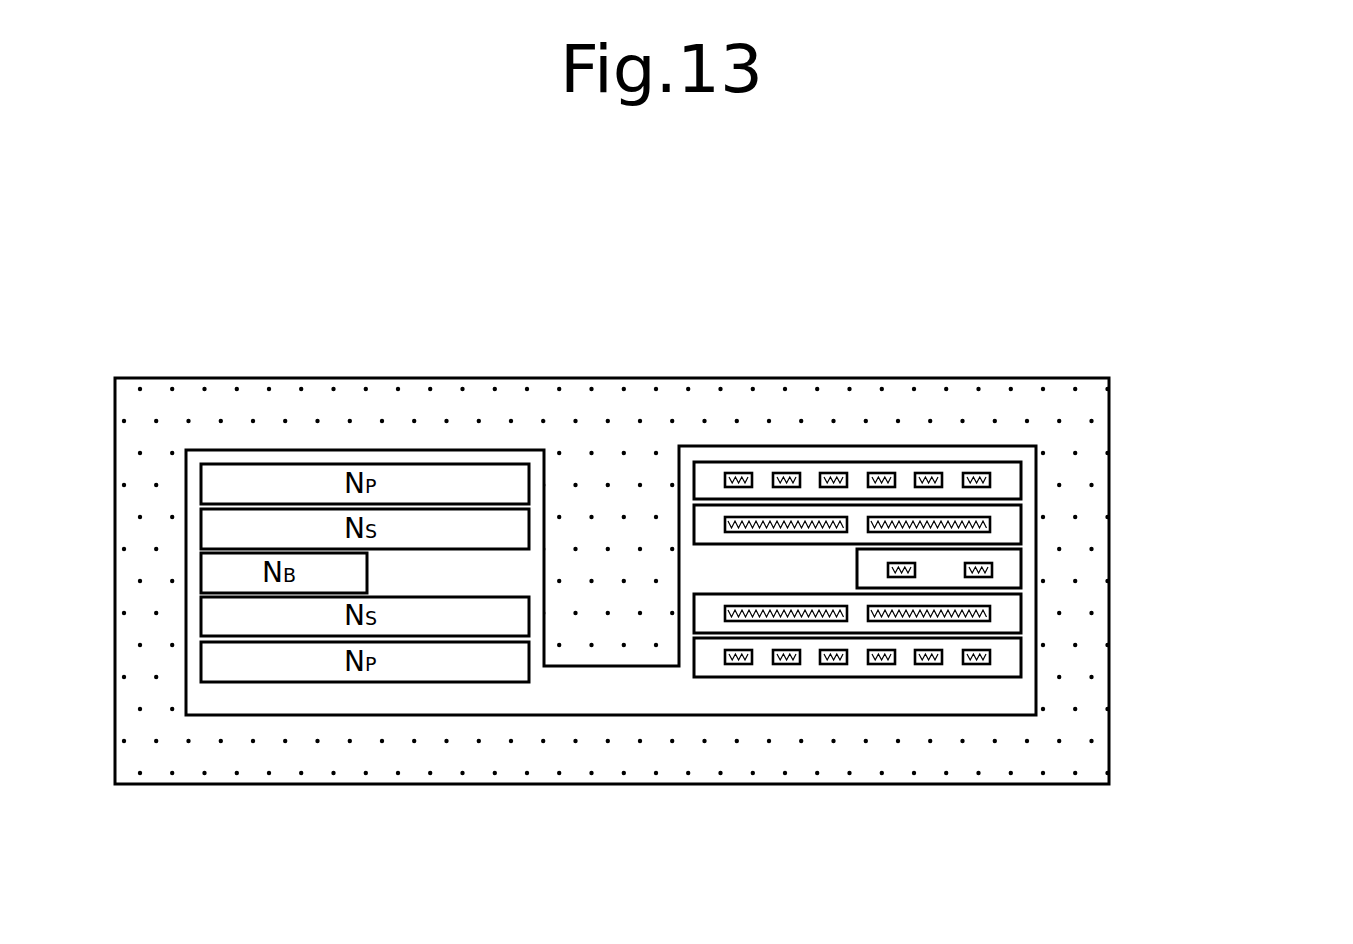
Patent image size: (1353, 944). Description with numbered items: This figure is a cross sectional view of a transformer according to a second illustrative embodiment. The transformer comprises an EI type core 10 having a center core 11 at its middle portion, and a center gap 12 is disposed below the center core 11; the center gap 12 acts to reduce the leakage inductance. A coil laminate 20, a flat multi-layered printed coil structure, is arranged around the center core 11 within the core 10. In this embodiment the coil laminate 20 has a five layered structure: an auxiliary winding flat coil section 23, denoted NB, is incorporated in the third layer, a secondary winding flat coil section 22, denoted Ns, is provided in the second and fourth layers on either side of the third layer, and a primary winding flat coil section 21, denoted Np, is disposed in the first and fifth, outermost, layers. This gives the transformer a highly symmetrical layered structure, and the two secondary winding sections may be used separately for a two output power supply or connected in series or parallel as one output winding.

The core 10 is at (470, 426).
The center core 11 is at (613, 573).
The center gap 12 is at (622, 691).
The coil laminate 20 is at (1252, 447).
The primary winding flat coil section 21 is at (1013, 475).
The secondary winding flat coil section 22 is at (1013, 522).
The auxiliary winding flat coil section 23 is at (1013, 567).